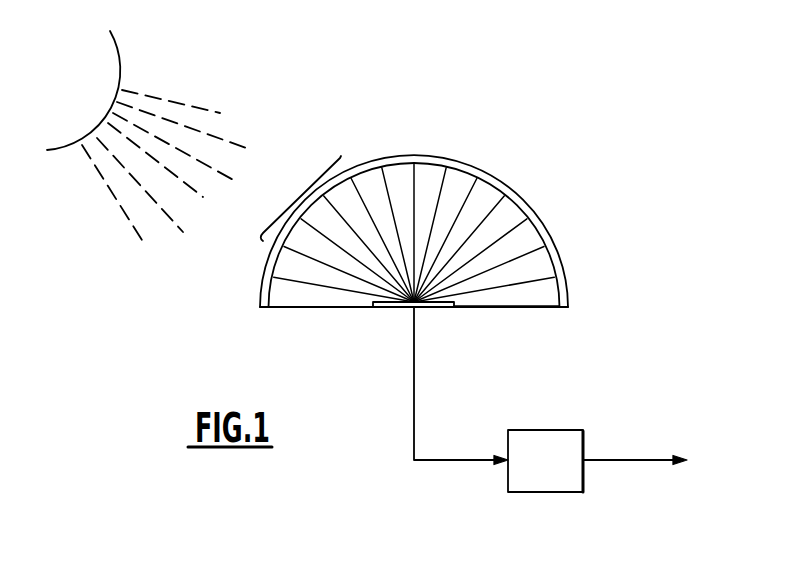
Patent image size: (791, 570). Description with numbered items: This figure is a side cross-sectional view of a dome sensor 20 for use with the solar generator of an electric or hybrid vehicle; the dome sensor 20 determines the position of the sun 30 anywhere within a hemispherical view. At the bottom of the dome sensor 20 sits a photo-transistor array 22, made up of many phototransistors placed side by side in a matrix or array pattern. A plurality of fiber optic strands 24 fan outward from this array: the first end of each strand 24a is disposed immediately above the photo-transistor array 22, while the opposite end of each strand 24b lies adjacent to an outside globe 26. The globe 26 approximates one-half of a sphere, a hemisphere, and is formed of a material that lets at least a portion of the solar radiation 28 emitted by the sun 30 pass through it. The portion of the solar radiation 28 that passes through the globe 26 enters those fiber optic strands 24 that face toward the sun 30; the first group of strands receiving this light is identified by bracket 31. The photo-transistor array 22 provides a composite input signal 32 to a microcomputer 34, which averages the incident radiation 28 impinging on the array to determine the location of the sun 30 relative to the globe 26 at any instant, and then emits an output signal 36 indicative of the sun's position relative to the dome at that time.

The dome sensor 20 is at (468, 142).
The photo-transistor array 22 is at (430, 306).
The fiber optic strands 24 is at (360, 194).
The first end of each strand 24a is at (467, 298).
The opposite end of each strand 24b is at (546, 276).
The globe 26 is at (362, 170).
The solar radiation 28 is at (173, 118).
The sun 30 is at (116, 58).
The bracket 31 is at (306, 195).
The composite input signal 32 is at (414, 428).
The microcomputer 34 is at (542, 430).
The output signal 36 is at (618, 460).